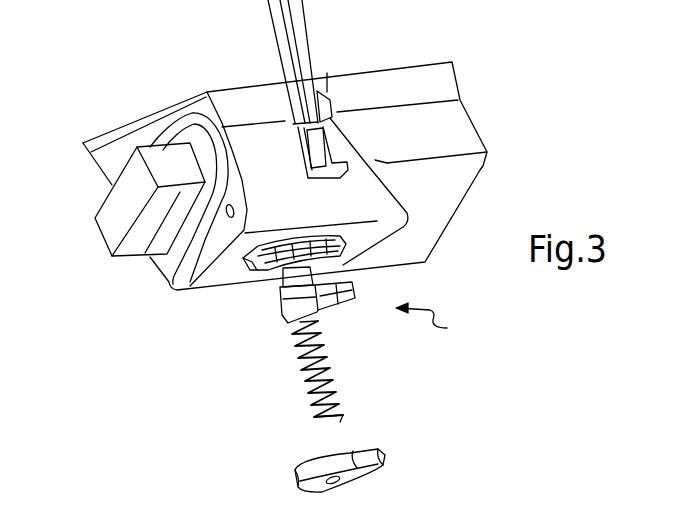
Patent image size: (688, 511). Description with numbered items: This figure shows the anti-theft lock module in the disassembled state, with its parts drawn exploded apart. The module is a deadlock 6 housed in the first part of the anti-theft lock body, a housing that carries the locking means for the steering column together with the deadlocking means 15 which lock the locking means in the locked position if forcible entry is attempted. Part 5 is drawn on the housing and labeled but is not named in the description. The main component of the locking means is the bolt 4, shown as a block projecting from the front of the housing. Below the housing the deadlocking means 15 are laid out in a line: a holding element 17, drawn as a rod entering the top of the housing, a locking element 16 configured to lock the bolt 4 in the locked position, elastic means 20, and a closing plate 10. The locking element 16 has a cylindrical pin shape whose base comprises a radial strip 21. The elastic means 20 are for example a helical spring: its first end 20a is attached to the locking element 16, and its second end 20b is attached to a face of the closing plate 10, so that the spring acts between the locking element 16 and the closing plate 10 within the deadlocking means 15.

The bolt 4 is at (112, 228).
The mounting flange 5 is at (123, 145).
The deadlock 6 is at (93, 105).
The closing plate 10 is at (375, 475).
The deadlocking means 15 is at (439, 322).
The locking element 16 is at (285, 300).
The holding element 17 is at (310, 45).
The elastic means 20 is at (323, 372).
The first end 20a is at (290, 327).
The second end 20b is at (332, 420).
The radial strip 21 is at (338, 298).